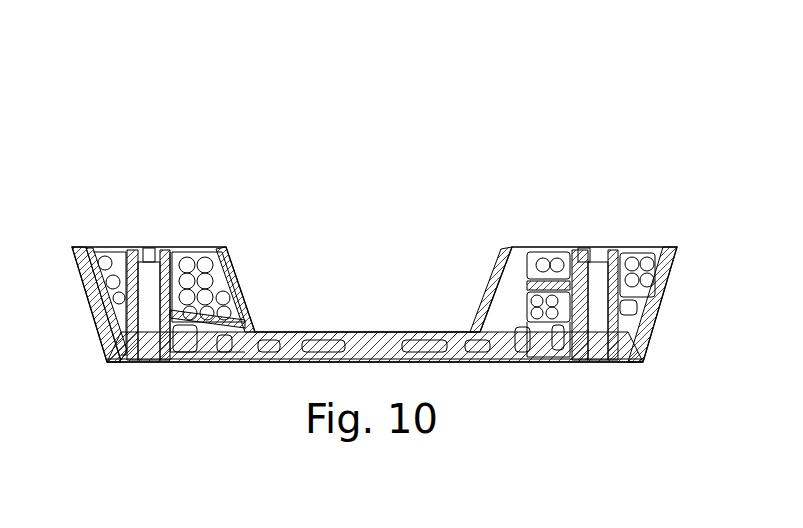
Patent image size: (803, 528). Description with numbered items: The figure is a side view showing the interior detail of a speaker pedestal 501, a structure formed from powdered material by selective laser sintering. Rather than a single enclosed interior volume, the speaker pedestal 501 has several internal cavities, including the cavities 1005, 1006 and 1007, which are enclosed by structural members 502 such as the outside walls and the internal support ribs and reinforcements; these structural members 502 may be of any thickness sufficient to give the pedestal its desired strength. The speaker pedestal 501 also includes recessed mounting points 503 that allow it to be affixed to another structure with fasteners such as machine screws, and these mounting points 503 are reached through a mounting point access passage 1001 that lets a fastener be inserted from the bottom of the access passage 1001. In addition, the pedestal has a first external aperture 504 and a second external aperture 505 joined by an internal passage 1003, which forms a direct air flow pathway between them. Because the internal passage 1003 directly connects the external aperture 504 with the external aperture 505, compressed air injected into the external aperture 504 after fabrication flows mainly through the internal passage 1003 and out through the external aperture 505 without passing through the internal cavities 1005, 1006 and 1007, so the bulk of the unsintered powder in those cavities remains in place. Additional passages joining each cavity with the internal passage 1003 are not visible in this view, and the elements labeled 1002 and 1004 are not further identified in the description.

The speaker pedestal 501 is at (692, 118).
The structural members 502 is at (290, 365).
The recessed mounting points 503 is at (597, 256).
The first external aperture 504 is at (573, 250).
The second external aperture 505 is at (570, 362).
The mounting point access passage 1001 is at (593, 348).
The end chamber 1002 is at (150, 313).
The internal passage 1003 is at (573, 323).
The partition 1004 is at (522, 283).
The internal cavity 1005 is at (545, 263).
The internal cavity 1006 is at (522, 315).
The internal cavity 1007 is at (633, 277).